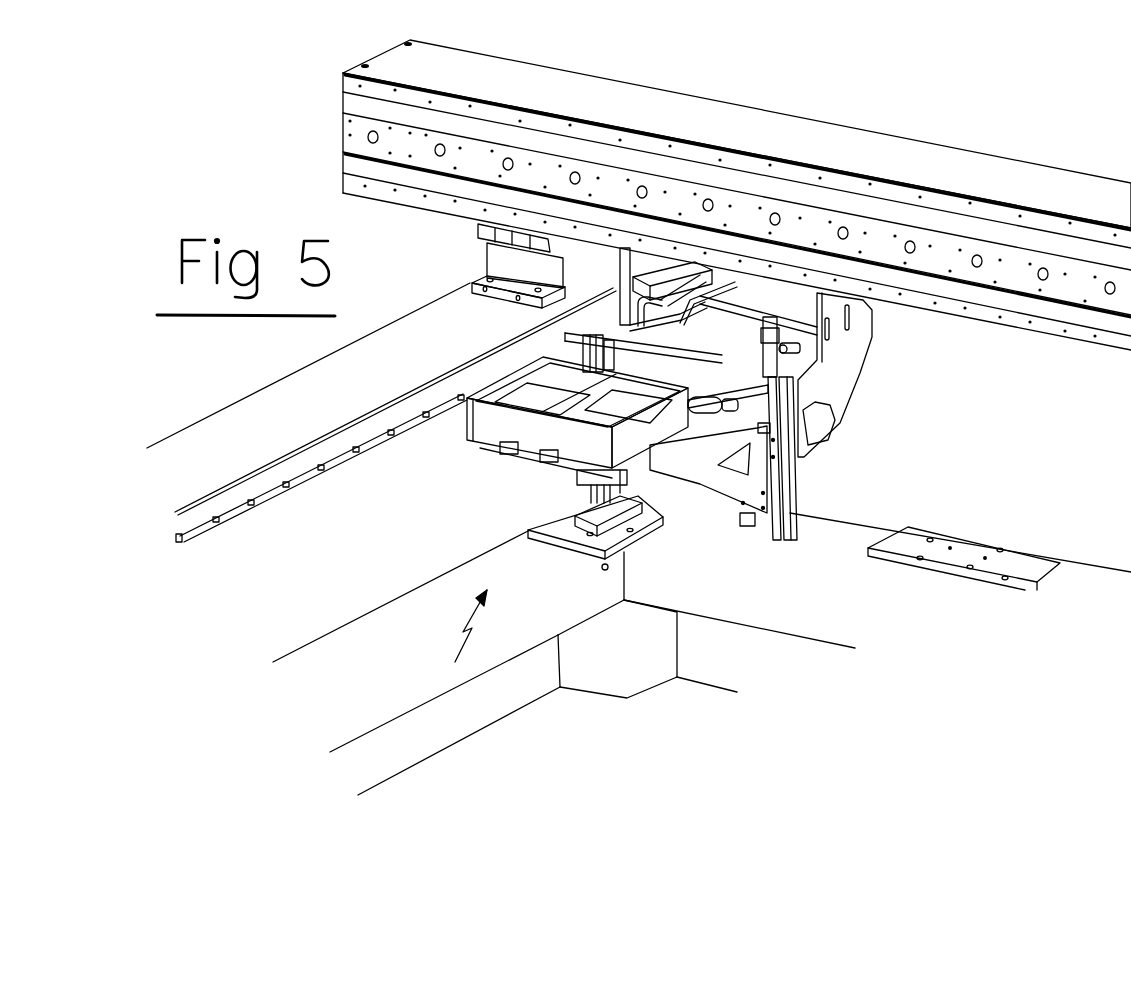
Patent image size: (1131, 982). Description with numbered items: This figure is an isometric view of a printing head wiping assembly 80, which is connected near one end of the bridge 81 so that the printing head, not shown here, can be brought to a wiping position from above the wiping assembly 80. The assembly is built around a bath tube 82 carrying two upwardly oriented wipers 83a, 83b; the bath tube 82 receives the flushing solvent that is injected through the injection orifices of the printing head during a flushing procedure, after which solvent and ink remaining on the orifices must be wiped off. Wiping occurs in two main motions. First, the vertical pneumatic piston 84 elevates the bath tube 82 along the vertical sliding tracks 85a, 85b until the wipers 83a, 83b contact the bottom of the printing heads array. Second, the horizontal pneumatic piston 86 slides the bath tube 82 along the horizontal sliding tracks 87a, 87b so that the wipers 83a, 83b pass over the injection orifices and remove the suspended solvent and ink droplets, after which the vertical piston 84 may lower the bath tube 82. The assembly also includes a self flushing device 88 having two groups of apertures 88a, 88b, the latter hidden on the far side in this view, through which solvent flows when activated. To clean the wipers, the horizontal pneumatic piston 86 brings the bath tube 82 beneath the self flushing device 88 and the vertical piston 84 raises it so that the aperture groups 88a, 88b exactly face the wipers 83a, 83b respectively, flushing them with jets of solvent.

The wiping assembly 80 is at (639, 539).
The bridge 81 is at (737, 193).
The bath tube 82 is at (332, 468).
The wiper 83a is at (546, 434).
The wiper 83b is at (522, 484).
The vertical pneumatic piston 84 is at (844, 357).
The vertical sliding track 85a is at (855, 380).
The vertical sliding track 85b is at (528, 366).
The horizontal pneumatic piston 86 is at (712, 496).
The horizontal sliding track 87a is at (764, 494).
The horizontal sliding track 87b is at (562, 370).
The self flushing device 88 is at (744, 210).
The apertures 88a is at (800, 218).
The apertures 88b is at (537, 281).